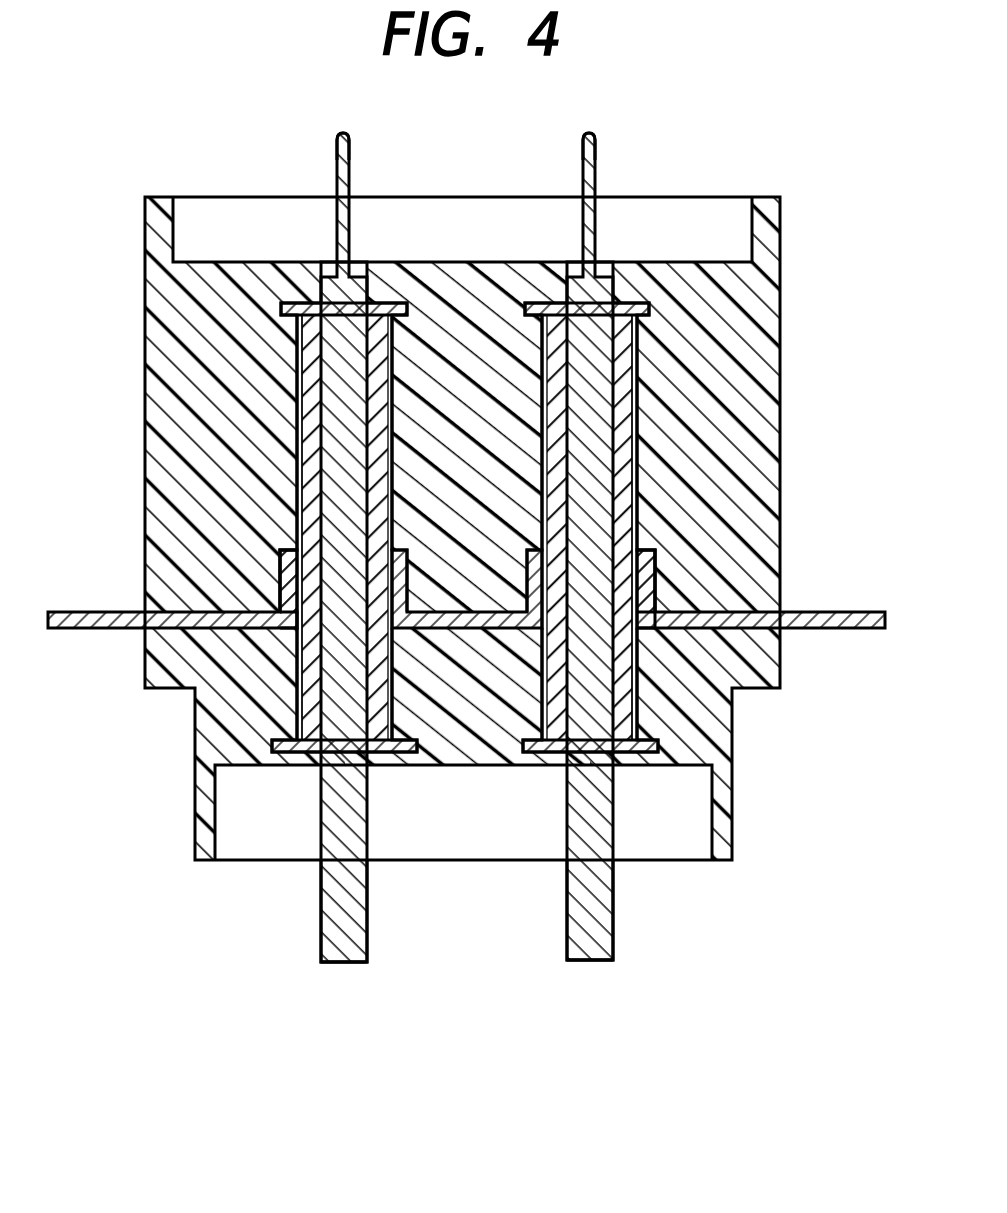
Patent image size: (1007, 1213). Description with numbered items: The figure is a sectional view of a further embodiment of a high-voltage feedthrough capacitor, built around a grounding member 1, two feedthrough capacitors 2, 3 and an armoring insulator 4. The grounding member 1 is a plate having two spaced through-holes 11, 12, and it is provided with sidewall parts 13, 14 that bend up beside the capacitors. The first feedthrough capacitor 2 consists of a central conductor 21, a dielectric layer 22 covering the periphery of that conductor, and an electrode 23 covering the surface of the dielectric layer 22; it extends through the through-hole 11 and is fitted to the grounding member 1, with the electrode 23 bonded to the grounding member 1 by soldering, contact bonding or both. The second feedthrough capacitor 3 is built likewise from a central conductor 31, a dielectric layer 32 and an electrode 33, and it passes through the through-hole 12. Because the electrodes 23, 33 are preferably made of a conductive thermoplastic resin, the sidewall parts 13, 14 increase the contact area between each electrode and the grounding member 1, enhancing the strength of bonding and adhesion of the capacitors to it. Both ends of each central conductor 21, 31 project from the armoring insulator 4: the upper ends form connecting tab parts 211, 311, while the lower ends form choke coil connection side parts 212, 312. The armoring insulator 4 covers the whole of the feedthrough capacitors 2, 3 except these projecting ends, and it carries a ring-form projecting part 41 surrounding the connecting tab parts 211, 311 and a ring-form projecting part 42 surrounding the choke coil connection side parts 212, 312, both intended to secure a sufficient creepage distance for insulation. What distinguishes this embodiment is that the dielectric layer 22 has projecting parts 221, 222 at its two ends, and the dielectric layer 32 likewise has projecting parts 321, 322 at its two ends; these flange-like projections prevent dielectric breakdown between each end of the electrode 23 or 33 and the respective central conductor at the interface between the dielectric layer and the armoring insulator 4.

The grounding member 1 is at (813, 638).
The through-hole 11 is at (287, 644).
The through-hole 12 is at (646, 642).
The sidewall part 13 is at (283, 563).
The sidewall part 14 is at (656, 560).
The feedthrough capacitor 2 is at (389, 289).
The central conductor 21 is at (381, 945).
The connecting tab part 211 is at (345, 132).
The choke coil connection side part 212 is at (338, 957).
The dielectric layer 22 is at (305, 353).
The electrode 23 is at (297, 437).
The projecting part 221 is at (291, 302).
The projecting part 222 is at (402, 750).
The feedthrough capacitor 3 is at (649, 289).
The central conductor 31 is at (626, 944).
The connecting tab part 311 is at (590, 132).
The choke coil connection side part 312 is at (585, 957).
The dielectric layer 32 is at (635, 362).
The electrode 33 is at (637, 445).
The projecting part 321 is at (540, 302).
The projecting part 322 is at (533, 750).
The armoring insulator 4 is at (138, 287).
The ring-form projecting part 41 is at (778, 237).
The ring-form projecting part 42 is at (727, 831).